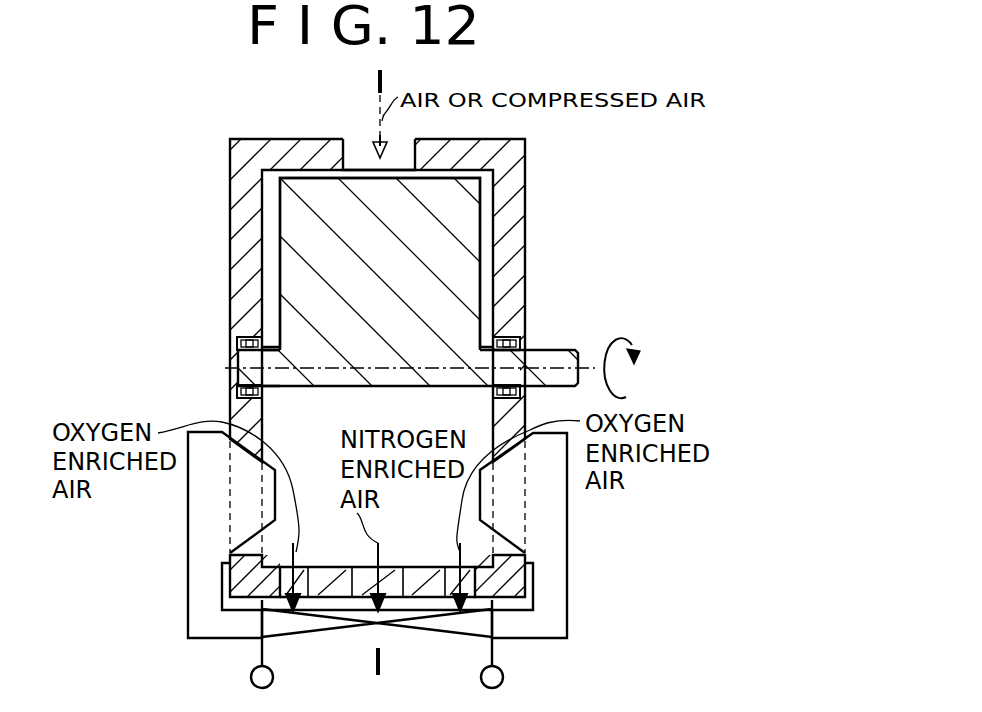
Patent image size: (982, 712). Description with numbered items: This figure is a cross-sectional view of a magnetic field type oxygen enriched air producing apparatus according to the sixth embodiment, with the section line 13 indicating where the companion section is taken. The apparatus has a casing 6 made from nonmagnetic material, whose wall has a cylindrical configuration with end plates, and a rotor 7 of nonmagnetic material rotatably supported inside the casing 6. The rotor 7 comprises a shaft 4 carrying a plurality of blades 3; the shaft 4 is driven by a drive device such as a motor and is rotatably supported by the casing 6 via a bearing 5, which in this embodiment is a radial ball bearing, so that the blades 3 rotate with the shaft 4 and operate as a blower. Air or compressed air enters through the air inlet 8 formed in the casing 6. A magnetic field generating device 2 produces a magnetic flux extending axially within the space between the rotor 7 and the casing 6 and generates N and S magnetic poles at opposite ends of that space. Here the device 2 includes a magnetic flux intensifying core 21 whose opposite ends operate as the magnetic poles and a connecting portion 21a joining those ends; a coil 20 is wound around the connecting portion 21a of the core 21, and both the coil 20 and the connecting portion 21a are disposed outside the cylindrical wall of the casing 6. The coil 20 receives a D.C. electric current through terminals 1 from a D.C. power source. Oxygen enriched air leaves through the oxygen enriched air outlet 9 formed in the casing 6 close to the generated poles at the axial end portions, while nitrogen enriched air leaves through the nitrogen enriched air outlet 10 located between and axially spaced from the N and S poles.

The terminals 1 is at (251, 677).
The magnetic field generating device 2 is at (433, 641).
The blades 3 is at (463, 227).
The shaft 4 is at (538, 358).
The bearing 5 is at (508, 335).
The casing 6 is at (501, 147).
The rotor 7 is at (481, 193).
The air inlet 8 is at (354, 140).
The oxygen enriched air outlet 9 is at (290, 572).
The nitrogen enriched air outlet 10 is at (397, 590).
The section line 13 is at (376, 84).
The coil 20 is at (473, 626).
The magnetic flux intensifying core 21 is at (553, 527).
The connecting portion 21a is at (527, 627).